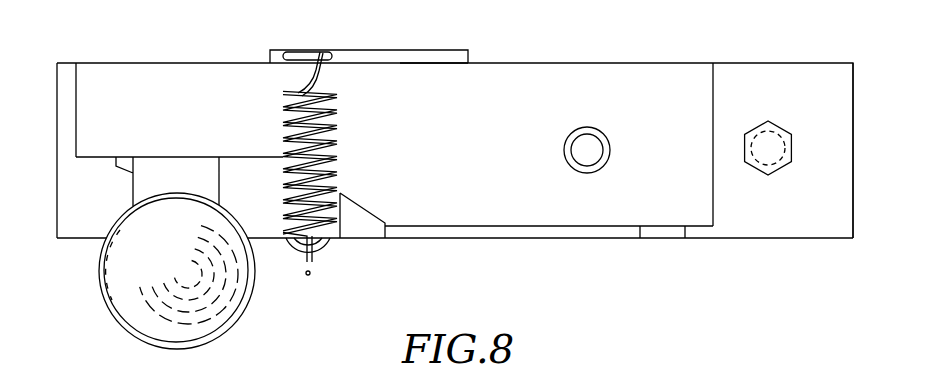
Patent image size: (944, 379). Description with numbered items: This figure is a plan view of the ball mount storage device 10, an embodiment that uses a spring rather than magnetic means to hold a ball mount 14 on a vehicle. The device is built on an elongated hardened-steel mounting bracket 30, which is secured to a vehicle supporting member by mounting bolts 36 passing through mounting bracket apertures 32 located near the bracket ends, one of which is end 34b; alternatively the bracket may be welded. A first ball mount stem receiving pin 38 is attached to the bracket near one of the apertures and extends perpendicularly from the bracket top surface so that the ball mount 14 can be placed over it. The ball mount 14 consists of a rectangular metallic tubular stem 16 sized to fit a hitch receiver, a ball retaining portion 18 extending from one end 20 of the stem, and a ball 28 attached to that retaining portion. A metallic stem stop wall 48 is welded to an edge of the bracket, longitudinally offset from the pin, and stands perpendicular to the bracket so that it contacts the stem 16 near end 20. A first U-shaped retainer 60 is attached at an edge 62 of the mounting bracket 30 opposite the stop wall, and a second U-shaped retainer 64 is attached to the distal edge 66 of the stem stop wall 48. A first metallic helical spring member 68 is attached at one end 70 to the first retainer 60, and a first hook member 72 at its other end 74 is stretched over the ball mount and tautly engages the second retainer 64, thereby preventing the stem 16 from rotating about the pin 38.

The ball mount storage device 10 is at (752, 62).
The ball mount 14 is at (532, 75).
The tubular stem 16 is at (520, 218).
The ball retaining portion 18 is at (120, 77).
The one end of the tubular stem 20 is at (219, 90).
The ball 28 is at (103, 302).
The mounting bracket 30 is at (678, 254).
The mounting bracket aperture 32 is at (777, 127).
The end of the mounting bracket 34b is at (807, 166).
The mounting bolt 36 is at (771, 175).
The first ball mount stem receiving pin 38 is at (562, 152).
The stem stop wall 48 is at (380, 57).
The first U-shaped retainer 60 is at (317, 276).
The edge of the mounting bracket 62 is at (368, 240).
The second U-shaped retainer 64 is at (302, 53).
The distal edge of stem stop wall 66 is at (437, 56).
The first metallic helical spring member 68 is at (337, 145).
The one end of spring 70 is at (311, 255).
The first hook member 72 is at (320, 50).
The other end of spring 74 is at (313, 77).